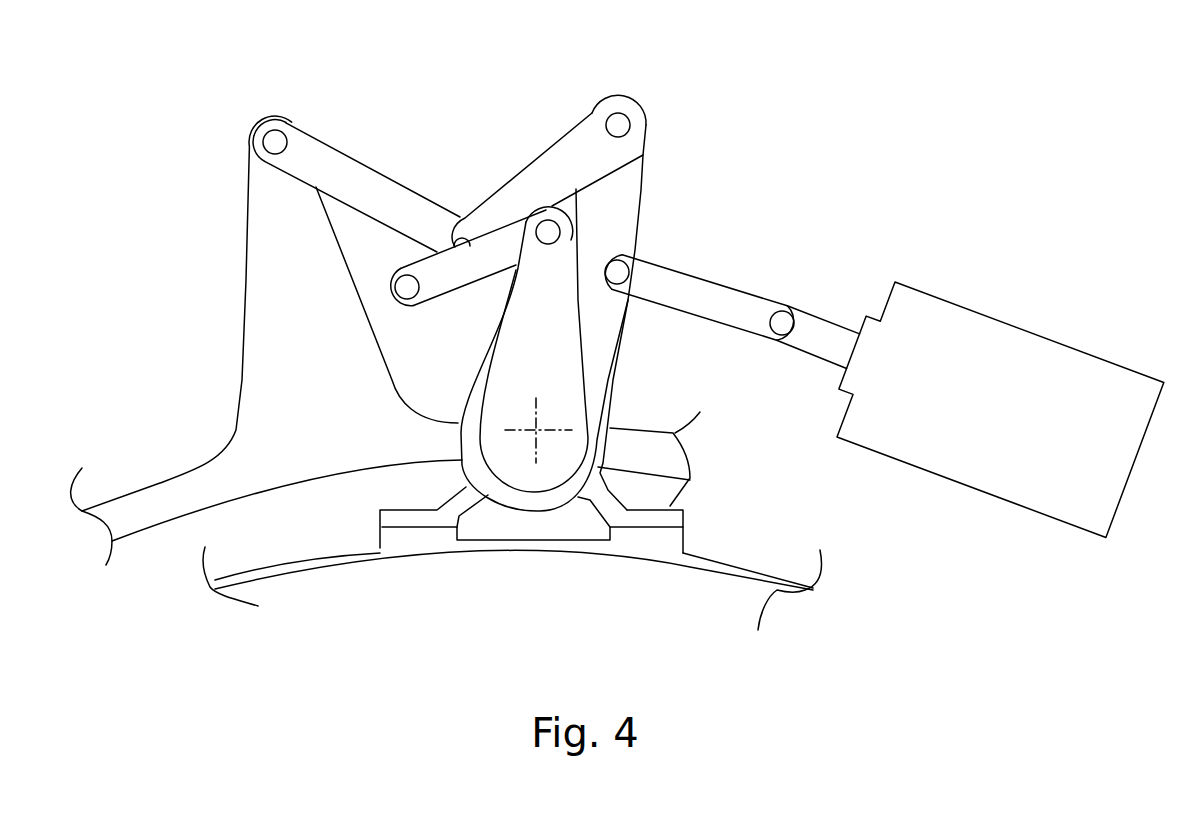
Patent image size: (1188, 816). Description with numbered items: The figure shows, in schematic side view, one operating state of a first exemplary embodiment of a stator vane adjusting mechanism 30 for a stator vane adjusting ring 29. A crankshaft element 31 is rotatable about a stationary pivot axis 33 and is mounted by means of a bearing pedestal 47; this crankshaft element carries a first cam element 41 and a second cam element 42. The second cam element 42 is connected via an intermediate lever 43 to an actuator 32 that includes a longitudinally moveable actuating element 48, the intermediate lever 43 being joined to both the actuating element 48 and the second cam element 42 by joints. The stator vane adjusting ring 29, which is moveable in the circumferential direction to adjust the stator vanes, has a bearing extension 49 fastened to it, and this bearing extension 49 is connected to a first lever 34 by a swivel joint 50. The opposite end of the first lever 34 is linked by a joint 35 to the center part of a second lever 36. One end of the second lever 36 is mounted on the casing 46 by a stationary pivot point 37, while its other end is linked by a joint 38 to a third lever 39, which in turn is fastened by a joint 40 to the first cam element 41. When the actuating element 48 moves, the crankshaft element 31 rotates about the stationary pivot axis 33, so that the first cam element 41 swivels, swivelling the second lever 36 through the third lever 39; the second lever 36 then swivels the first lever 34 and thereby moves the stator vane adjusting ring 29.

The stator vane adjusting ring 29 is at (163, 490).
The clamping assembly 30 is at (748, 187).
The crankshaft element 31 is at (545, 450).
The actuator 32 is at (997, 480).
The stationary pivot axis 33 is at (537, 431).
The first lever 34 is at (387, 190).
The joint 35 is at (463, 222).
The second lever 36 is at (577, 158).
The stationary pivot point 37 is at (622, 118).
The joint 38 is at (420, 302).
The third lever 39 is at (475, 268).
The joint 40 is at (562, 233).
The first cam element 41 is at (565, 250).
The second cam element 42 is at (613, 317).
The intermediate lever 43 is at (738, 302).
The casing 46 is at (736, 573).
The bearing pedestal 47 is at (607, 421).
The actuating element 48 is at (828, 324).
The bearing extension 49 is at (243, 298).
The swivel joint 50 is at (276, 134).